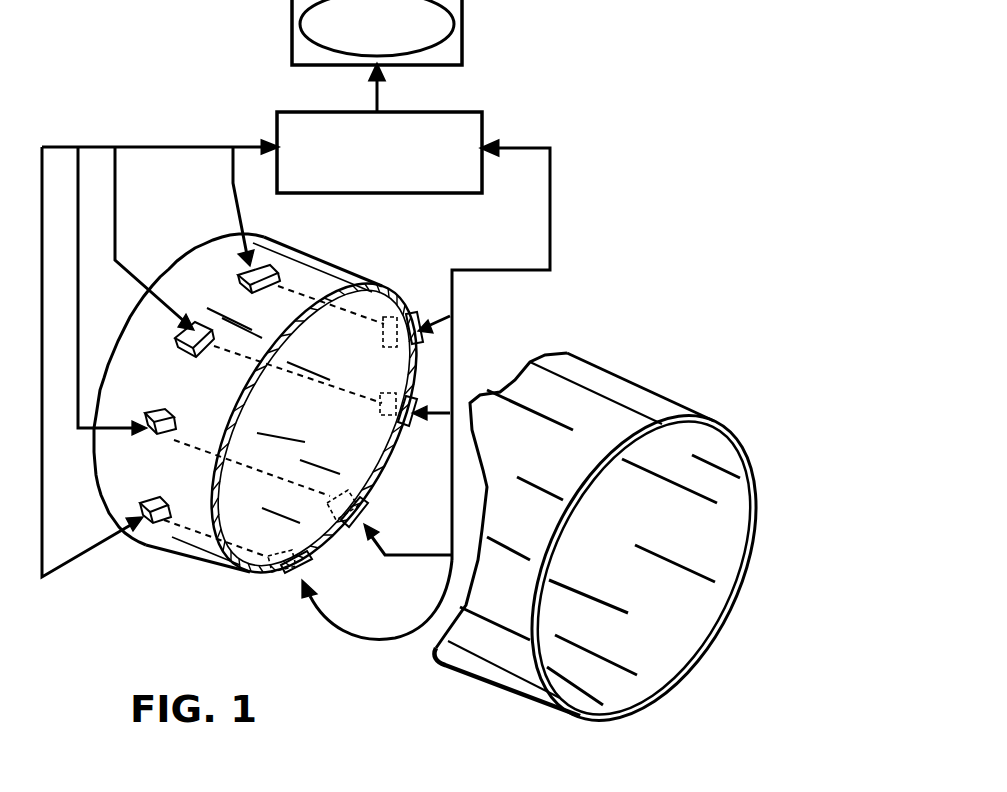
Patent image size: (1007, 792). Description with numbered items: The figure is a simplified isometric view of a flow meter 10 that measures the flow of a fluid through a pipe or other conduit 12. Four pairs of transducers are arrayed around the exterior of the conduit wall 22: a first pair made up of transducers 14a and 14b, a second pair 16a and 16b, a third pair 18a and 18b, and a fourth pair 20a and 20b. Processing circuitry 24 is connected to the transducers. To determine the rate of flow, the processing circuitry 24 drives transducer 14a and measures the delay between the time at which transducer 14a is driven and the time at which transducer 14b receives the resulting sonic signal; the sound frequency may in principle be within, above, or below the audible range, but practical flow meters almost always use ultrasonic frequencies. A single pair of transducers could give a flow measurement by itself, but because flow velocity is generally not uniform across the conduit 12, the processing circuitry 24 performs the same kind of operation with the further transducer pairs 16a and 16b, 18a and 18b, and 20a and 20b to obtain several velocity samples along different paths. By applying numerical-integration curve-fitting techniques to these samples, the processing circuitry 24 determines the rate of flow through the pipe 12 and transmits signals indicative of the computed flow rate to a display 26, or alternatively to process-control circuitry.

The flow meter 10 is at (644, 80).
The conduit 12 is at (695, 332).
The transducer 14a is at (240, 272).
The transducer 14b is at (412, 314).
The transducer 16a is at (188, 357).
The transducer 16b is at (408, 428).
The transducer 18a is at (150, 440).
The transducer 18b is at (360, 530).
The transducer 20a is at (155, 530).
The transducer 20b is at (306, 591).
The conduit wall 22 is at (683, 665).
The processing circuitry 24 is at (459, 112).
The display 26 is at (462, 27).